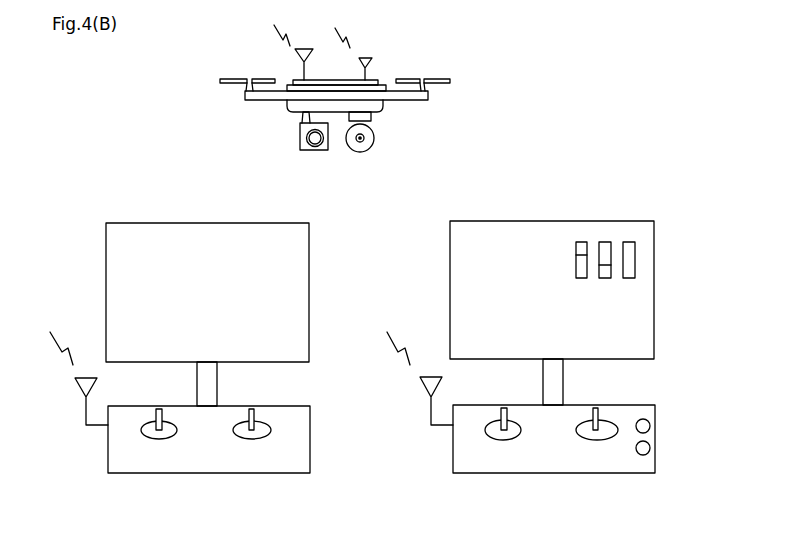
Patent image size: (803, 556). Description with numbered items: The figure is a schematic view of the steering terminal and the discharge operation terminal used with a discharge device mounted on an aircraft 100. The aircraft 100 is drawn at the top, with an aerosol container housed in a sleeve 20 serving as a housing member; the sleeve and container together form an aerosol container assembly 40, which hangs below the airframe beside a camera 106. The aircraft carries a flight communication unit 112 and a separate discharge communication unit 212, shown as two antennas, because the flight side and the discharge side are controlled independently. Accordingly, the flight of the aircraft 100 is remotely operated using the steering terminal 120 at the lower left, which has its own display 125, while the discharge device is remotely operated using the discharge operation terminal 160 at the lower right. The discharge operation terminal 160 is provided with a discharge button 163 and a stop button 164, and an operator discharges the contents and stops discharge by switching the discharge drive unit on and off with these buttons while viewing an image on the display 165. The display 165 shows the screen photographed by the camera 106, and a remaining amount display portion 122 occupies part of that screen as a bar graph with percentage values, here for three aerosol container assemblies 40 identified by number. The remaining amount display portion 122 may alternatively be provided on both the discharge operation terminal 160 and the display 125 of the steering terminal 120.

The aircraft 100 is at (257, 105).
The flight communication unit 112 is at (296, 55).
The discharge communication unit 212 is at (373, 63).
The camera 106 is at (298, 147).
The sleeve 20 is at (362, 152).
The aerosol container assembly 40 is at (381, 143).
The steering terminal 120 is at (108, 453).
The display 125 is at (130, 275).
The discharge operation terminal 160 is at (473, 476).
The display 165 is at (475, 272).
The remaining amount display portion 122 is at (643, 267).
The discharge button 163 is at (650, 424).
The stop button 164 is at (650, 452).